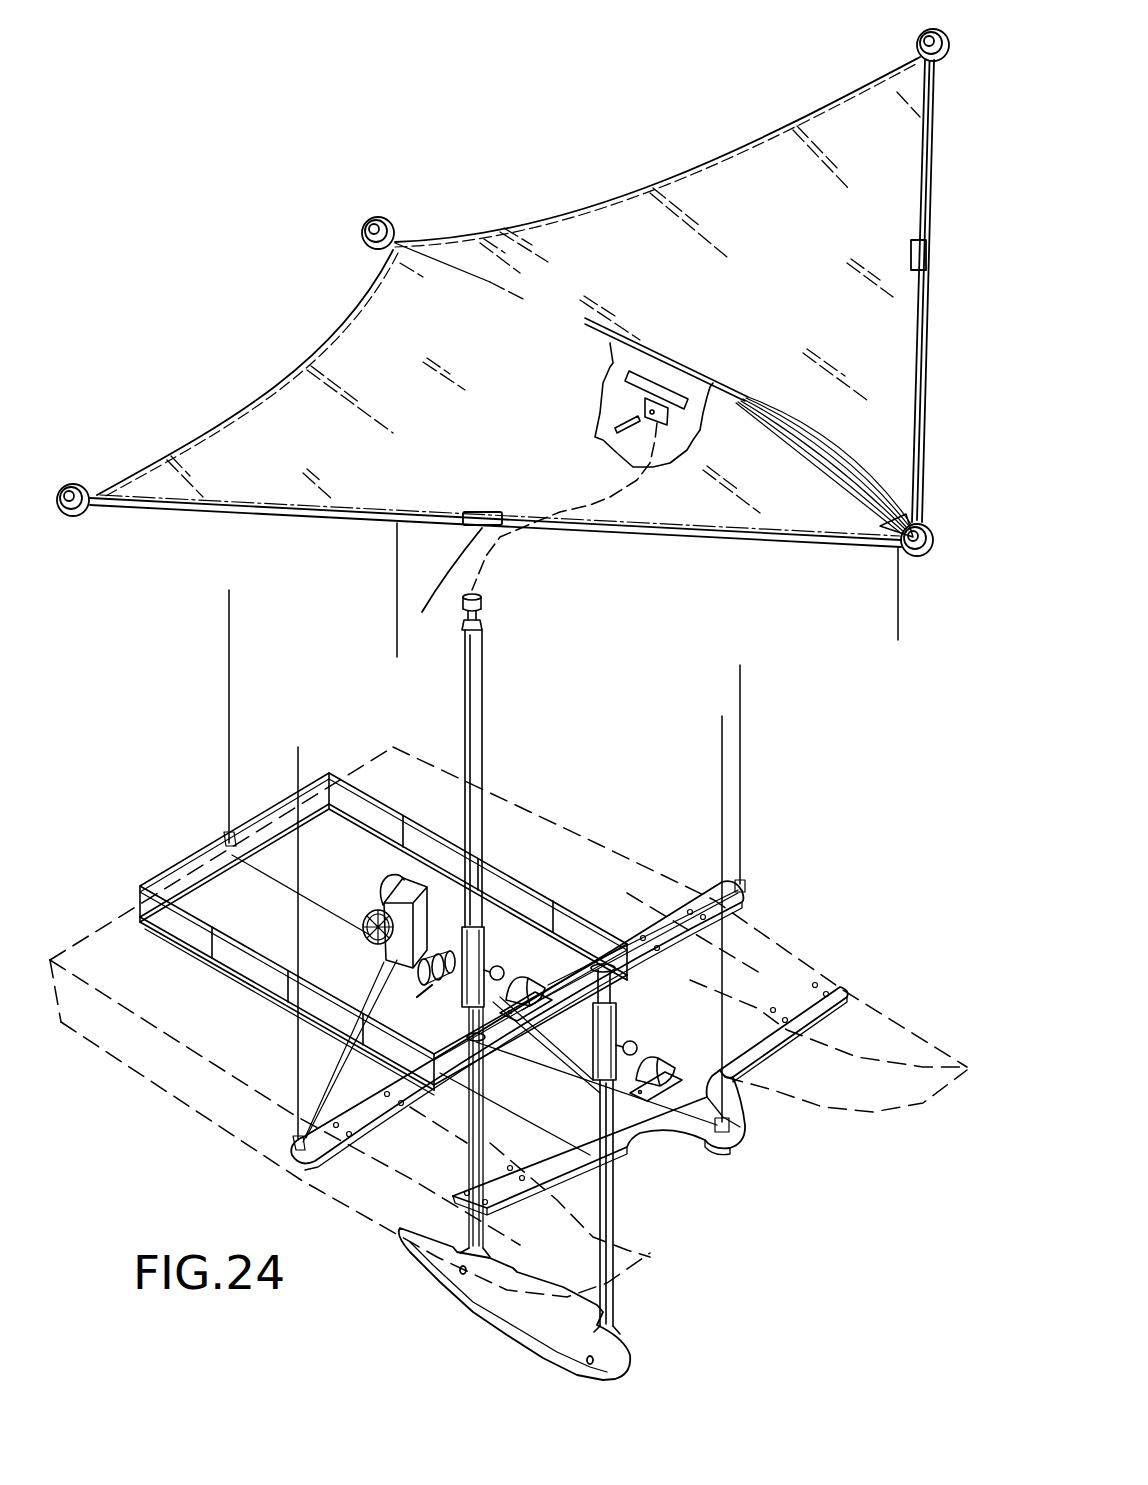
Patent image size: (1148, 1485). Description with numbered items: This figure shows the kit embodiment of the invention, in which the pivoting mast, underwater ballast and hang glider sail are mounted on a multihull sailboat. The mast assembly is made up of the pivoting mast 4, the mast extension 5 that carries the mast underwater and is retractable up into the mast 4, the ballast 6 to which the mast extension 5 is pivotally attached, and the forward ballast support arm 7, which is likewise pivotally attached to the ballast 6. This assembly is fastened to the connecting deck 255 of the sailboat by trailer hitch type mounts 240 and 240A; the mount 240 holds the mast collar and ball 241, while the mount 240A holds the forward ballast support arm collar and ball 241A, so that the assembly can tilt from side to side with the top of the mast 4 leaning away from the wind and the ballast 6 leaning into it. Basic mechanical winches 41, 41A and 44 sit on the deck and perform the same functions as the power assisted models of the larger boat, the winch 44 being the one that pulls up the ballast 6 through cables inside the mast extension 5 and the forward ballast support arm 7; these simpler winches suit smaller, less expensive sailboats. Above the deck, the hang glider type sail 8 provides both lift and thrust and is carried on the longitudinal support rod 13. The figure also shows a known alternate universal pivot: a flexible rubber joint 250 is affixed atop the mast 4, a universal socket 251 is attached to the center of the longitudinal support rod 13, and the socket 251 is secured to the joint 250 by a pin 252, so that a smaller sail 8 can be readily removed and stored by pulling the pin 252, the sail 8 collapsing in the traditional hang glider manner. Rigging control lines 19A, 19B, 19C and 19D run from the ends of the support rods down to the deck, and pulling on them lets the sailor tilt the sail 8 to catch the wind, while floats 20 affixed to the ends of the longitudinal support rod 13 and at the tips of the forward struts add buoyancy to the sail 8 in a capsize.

The pivoting mast 4 is at (483, 716).
The mast extension 5 is at (483, 1105).
The ballast 6 is at (517, 1308).
The forward ballast support arm 7 is at (614, 1195).
The hang glider type sail 8 is at (655, 186).
The longitudinal support rod 13 is at (610, 345).
The rigging control line 19A is at (898, 606).
The rigging control line 19B is at (397, 585).
The rigging control line 19C is at (931, 253).
The rigging control line 19D is at (422, 612).
The floats 20 is at (392, 228).
The mechanical winch 41 is at (378, 942).
The mechanical winch 41A is at (386, 884).
The winch 44 is at (425, 985).
The trailer hitch type mount 240 is at (538, 1008).
The trailer hitch type mount 240A is at (648, 1078).
The mast collar and ball 241 is at (500, 965).
The forward ballast support arm collar and ball 241A is at (630, 1040).
The flexible rubber joint 250 is at (480, 612).
The universal socket 251 is at (672, 392).
The pin 252 is at (626, 422).
The connecting deck 255 is at (823, 982).